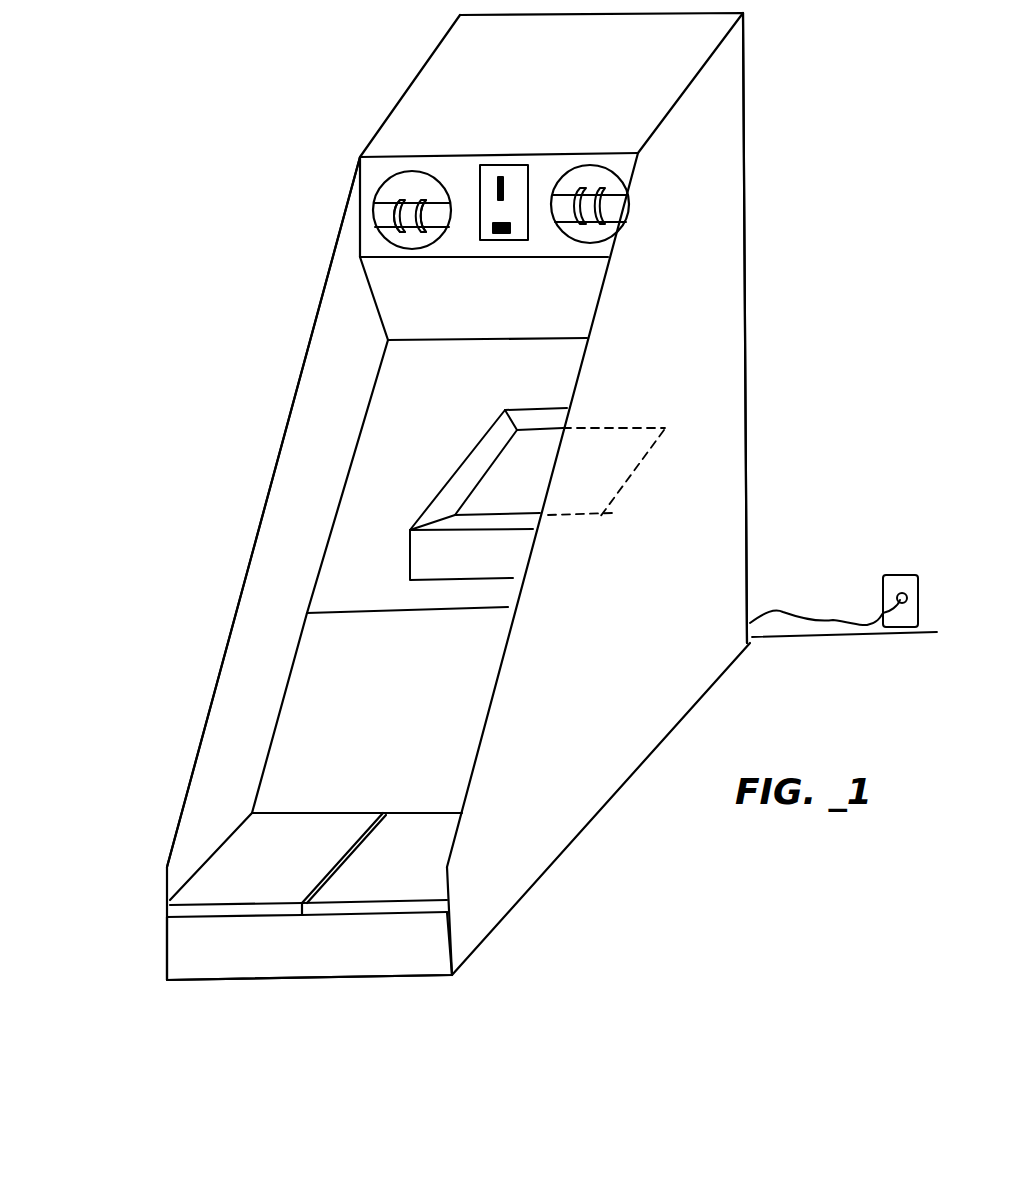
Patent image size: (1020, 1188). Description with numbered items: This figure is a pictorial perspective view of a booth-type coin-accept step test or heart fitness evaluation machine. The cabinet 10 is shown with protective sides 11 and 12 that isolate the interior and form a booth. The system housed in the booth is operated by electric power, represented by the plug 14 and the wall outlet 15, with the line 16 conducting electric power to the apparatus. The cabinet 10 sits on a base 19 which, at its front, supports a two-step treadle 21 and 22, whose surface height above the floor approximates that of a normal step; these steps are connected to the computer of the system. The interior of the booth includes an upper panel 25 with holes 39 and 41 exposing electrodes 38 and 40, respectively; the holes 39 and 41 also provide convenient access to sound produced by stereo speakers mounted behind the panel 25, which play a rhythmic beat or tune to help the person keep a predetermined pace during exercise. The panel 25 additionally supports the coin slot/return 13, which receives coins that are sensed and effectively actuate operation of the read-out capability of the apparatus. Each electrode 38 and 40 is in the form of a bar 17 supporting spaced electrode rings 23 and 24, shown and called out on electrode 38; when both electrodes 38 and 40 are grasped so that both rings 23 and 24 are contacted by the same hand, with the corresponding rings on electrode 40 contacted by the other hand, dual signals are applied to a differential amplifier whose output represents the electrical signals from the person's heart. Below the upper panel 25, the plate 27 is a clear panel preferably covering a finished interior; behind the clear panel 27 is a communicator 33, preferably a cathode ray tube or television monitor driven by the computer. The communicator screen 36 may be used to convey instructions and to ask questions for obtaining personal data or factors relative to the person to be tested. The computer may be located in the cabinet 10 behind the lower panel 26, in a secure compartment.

The cabinet 10 is at (765, 313).
The protective side 11 is at (287, 437).
The protective side 12 is at (705, 483).
The coin slot/return 13 is at (485, 165).
The plug 14 is at (898, 600).
The wall outlet 15 is at (885, 575).
The line 16 is at (780, 610).
The bar 17 is at (380, 220).
The base 19 is at (163, 960).
The treadle step 21 is at (210, 887).
The treadle step 22 is at (407, 882).
The electrode ring 23 is at (398, 233).
The electrode ring 24 is at (422, 233).
The upper panel 25 is at (395, 165).
The panel 26 is at (376, 706).
The clear panel 27 is at (437, 421).
The communicator 33 is at (505, 410).
The communicator screen 36 is at (500, 472).
The electrode 38 is at (372, 212).
The hole 39 is at (378, 190).
The electrode 40 is at (630, 205).
The hole 41 is at (613, 175).